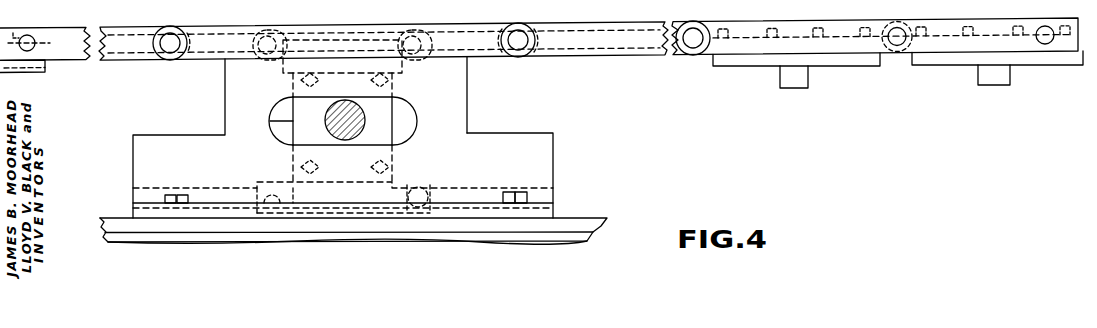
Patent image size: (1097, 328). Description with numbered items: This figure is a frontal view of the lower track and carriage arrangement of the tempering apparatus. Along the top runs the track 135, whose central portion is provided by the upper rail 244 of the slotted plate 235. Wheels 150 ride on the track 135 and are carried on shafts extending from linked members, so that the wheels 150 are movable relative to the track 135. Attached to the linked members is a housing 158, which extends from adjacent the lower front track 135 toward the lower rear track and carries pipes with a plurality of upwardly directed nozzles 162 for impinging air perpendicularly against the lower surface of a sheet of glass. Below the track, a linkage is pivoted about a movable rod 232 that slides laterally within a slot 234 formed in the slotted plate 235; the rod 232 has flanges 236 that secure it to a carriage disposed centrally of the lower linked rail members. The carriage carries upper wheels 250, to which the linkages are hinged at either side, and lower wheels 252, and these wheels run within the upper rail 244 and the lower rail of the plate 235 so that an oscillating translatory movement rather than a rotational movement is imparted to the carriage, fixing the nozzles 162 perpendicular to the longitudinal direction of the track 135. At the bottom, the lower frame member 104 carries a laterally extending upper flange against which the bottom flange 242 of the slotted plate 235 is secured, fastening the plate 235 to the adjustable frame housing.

The lower frame member 104 is at (392, 219).
The track 135 is at (126, 66).
The wheel 150 is at (896, 44).
The housing 158 is at (745, 64).
The nozzle 162 is at (816, 26).
The movable rod 232 is at (354, 135).
The slot 234 is at (285, 138).
The slotted plate 235 is at (493, 134).
The flange 236 is at (271, 114).
The bottom flange 242 is at (541, 216).
The upper rail 244 is at (480, 47).
The upper wheel 250 is at (430, 51).
The lower wheel 252 is at (430, 190).